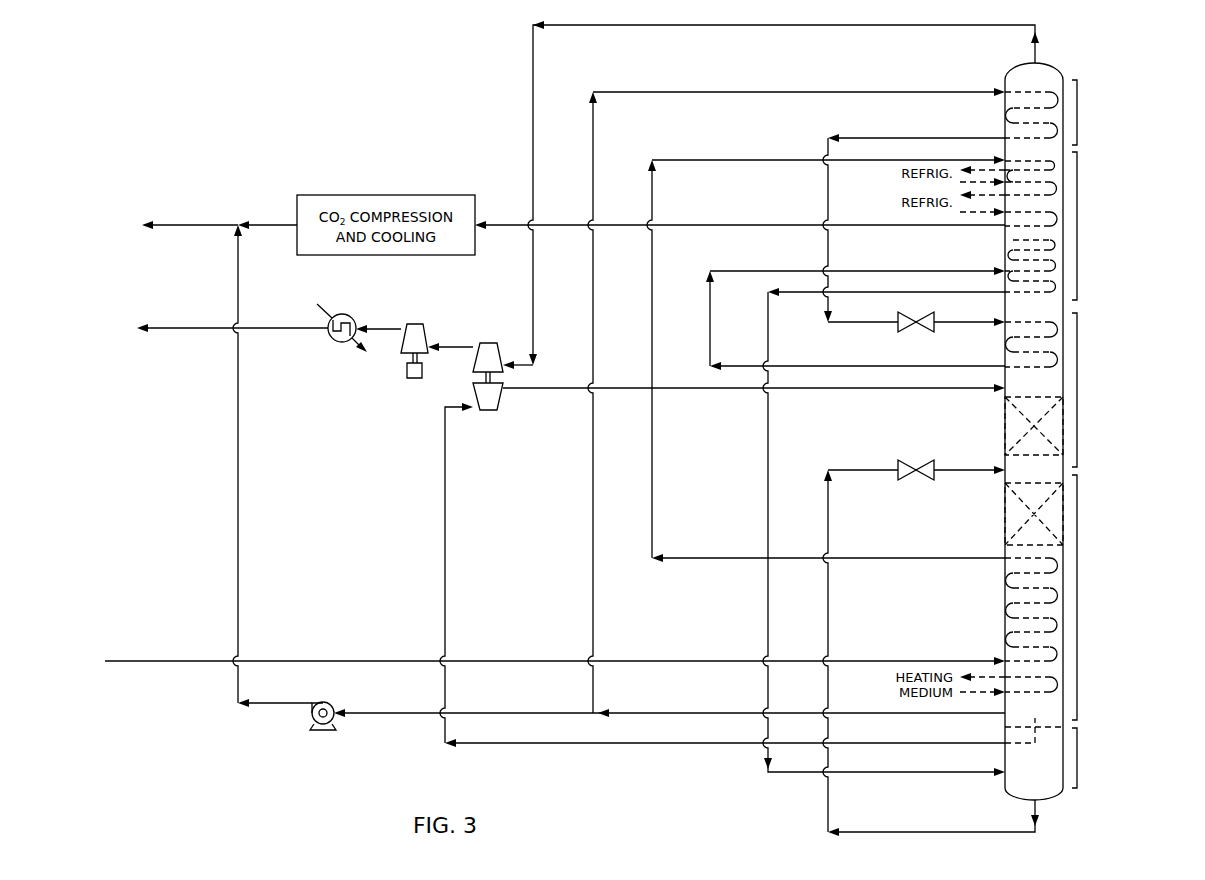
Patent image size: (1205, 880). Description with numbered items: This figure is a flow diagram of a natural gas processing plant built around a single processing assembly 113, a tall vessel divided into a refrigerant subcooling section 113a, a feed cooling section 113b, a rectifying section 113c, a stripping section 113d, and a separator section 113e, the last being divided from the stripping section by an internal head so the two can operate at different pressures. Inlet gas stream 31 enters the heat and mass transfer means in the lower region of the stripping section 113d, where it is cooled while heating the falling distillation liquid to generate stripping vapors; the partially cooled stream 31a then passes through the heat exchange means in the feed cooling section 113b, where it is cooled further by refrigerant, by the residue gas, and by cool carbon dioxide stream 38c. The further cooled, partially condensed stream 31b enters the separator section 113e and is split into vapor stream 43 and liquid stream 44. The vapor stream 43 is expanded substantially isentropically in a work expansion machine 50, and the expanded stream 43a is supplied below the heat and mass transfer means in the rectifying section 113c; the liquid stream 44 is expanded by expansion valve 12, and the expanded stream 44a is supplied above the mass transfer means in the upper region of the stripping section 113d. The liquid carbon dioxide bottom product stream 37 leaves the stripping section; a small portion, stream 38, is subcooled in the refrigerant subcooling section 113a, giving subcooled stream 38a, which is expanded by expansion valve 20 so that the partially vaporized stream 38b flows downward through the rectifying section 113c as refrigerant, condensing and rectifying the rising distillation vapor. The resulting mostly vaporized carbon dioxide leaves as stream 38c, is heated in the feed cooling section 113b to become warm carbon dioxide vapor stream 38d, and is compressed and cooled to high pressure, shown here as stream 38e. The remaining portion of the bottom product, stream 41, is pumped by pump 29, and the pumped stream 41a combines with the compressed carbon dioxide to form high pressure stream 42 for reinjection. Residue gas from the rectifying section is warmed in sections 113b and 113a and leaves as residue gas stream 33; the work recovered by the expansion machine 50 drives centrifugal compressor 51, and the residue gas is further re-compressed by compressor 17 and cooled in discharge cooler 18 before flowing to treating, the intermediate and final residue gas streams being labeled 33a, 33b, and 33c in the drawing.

The expansion valve 12 is at (905, 480).
The compressor 17 is at (414, 323).
The discharge cooler 18 is at (343, 344).
The expansion valve 20 is at (905, 332).
The pump 29 is at (328, 699).
The inlet gas stream 31 is at (196, 663).
The partially cooled stream 31a is at (978, 559).
The further cooled stream 31b is at (767, 325).
The residue gas stream 33 is at (978, 26).
The compressed overhead stream 33a is at (462, 346).
The expanded overhead stream 33b is at (388, 328).
The residue gas stream 33c is at (196, 330).
The column bottom product stream 37 is at (684, 711).
The portion of column bottom product stream 38 is at (590, 325).
The subcooled liquid stream 38a is at (978, 137).
The expanded stream 38b is at (916, 335).
The cool carbon dioxide stream 38c is at (707, 325).
The warm carbon dioxide vapor stream 38d is at (978, 227).
The compressed CO2 stream 38e is at (268, 227).
The remaining portion of column bottom product stream 41 is at (388, 715).
The pumped liquid stream 41a is at (285, 705).
The high pressure carbon dioxide stream 42 is at (196, 227).
The vapor stream 43 is at (684, 745).
The expanded stream 43a is at (978, 390).
The liquid stream 44 is at (824, 804).
The expanded stream 44a is at (916, 482).
The work expansion machine 50 is at (488, 412).
The centrifugal compressor 51 is at (488, 341).
The processing assembly 113 is at (1002, 627).
The refrigerant subcooling section 113a is at (1080, 109).
The feed cooling section 113b is at (1080, 231).
The rectifying section 113c is at (1080, 391).
The stripping section 113d is at (1080, 598).
The separator section 113e is at (1080, 761).